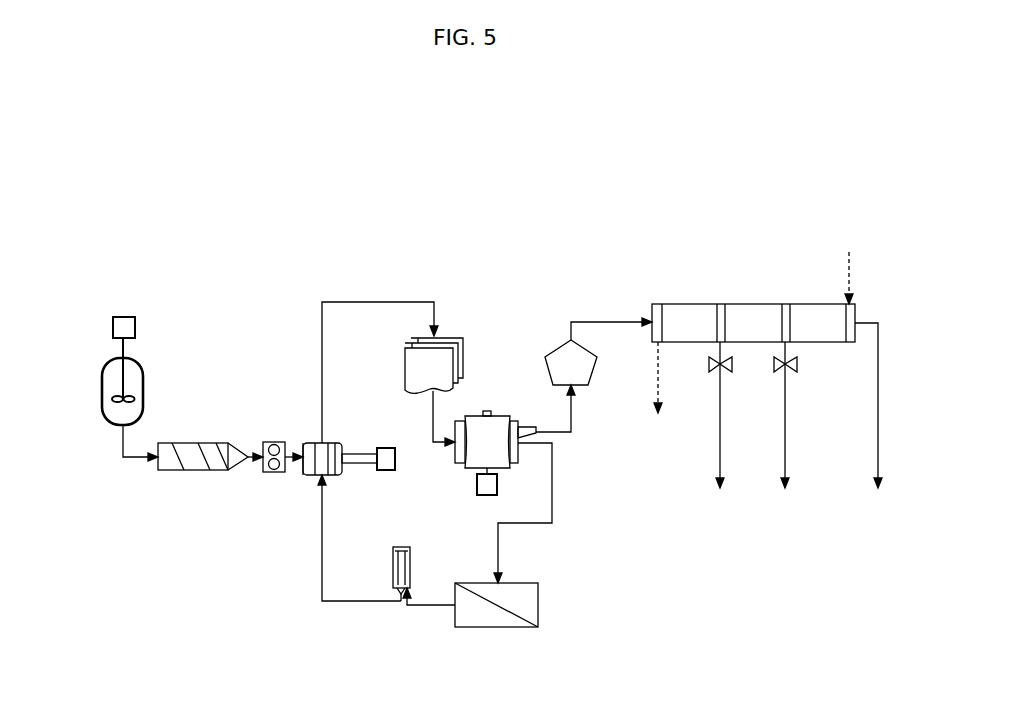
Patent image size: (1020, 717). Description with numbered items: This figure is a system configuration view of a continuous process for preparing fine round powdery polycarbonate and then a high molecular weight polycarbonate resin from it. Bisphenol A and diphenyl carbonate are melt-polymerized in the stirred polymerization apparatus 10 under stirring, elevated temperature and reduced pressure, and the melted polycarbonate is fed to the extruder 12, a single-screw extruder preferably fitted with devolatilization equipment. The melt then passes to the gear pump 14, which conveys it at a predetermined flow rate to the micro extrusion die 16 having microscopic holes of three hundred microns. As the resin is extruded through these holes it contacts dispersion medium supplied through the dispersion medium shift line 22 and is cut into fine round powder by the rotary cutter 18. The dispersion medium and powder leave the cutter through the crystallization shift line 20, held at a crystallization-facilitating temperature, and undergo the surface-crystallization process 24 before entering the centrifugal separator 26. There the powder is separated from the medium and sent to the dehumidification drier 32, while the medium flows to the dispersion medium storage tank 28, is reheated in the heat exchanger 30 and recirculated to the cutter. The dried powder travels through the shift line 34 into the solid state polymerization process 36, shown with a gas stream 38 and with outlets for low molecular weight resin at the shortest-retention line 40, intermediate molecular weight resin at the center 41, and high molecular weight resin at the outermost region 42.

The stirred polymerization apparatus 10 is at (102, 395).
The extruder 12 is at (192, 470).
The gear pump 14 is at (277, 473).
The micro extrusion die 16 is at (312, 475).
The rotary cutter 18 is at (335, 442).
The crystallization shift line 20 is at (320, 407).
The dispersion medium shift line 22 is at (321, 547).
The surface-crystallization process 24 is at (463, 367).
The centrifugal separator 26 is at (488, 412).
The dispersion medium storage tank 28 is at (538, 605).
The heat exchanger 30 is at (403, 547).
The dehumidification drier 32 is at (598, 357).
The shift line 34 is at (623, 318).
The solid state polymerization process 36 is at (753, 303).
The gas stream 38 is at (753, 335).
The low molecular weight discharge line 40 is at (719, 428).
The intermediate molecular weight discharge 41 is at (786, 429).
The high molecular weight discharge 42 is at (872, 420).